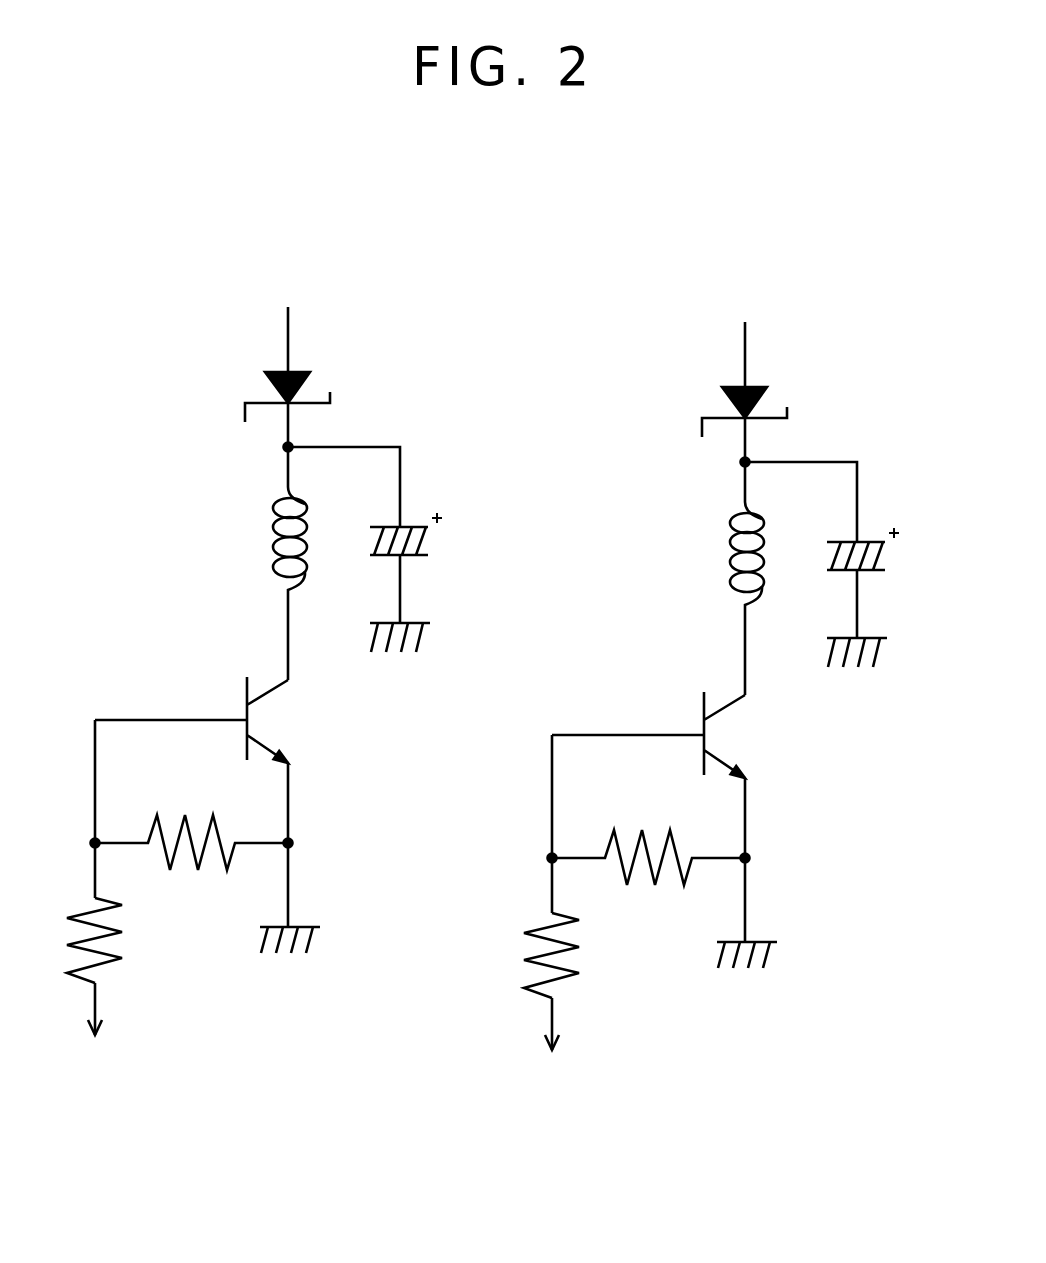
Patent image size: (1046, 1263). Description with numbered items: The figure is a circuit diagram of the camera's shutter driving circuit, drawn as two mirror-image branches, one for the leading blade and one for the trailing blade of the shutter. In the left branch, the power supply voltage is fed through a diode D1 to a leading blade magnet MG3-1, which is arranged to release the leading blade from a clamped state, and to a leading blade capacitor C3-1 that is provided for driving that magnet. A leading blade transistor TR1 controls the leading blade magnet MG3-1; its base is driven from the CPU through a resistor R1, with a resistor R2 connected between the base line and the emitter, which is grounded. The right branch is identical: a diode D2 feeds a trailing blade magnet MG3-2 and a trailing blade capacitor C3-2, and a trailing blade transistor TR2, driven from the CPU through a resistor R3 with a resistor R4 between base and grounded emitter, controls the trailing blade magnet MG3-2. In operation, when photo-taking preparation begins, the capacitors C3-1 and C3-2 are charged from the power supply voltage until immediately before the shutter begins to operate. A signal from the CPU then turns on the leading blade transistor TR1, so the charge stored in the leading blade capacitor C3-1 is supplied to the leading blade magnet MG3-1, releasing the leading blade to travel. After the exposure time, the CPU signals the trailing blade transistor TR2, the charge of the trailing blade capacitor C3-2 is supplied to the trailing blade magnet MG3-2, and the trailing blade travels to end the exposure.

The diode D1 is at (310, 409).
The diode D2 is at (767, 424).
The leading blade magnet MG3-1 is at (243, 563).
The trailing blade magnet MG3-2 is at (700, 578).
The leading blade capacitor C3-1 is at (426, 582).
The trailing blade capacitor C3-2 is at (883, 597).
The leading blade transistor TR1 is at (291, 760).
The trailing blade transistor TR2 is at (748, 775).
The resistor R1 is at (73, 940).
The resistor R2 is at (191, 821).
The resistor R3 is at (530, 955).
The resistor R4 is at (648, 836).